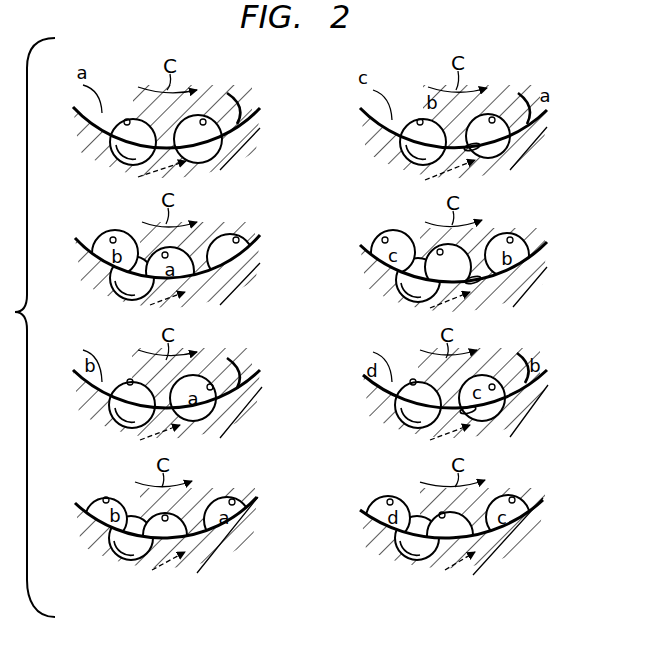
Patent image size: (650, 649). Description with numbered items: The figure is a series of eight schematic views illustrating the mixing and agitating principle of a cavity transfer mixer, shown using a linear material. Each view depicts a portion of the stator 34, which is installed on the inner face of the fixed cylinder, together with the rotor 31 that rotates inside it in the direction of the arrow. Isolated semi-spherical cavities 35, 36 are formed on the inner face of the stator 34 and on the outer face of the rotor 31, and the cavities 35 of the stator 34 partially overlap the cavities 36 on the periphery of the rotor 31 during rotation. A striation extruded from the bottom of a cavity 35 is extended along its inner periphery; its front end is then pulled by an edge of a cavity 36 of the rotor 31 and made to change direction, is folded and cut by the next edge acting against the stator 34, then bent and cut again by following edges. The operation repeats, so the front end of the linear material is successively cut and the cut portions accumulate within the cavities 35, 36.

The rotor 31 is at (237, 90).
The stator 34 is at (248, 147).
The cavities 35 is at (142, 160).
The cavities 36 is at (205, 120).